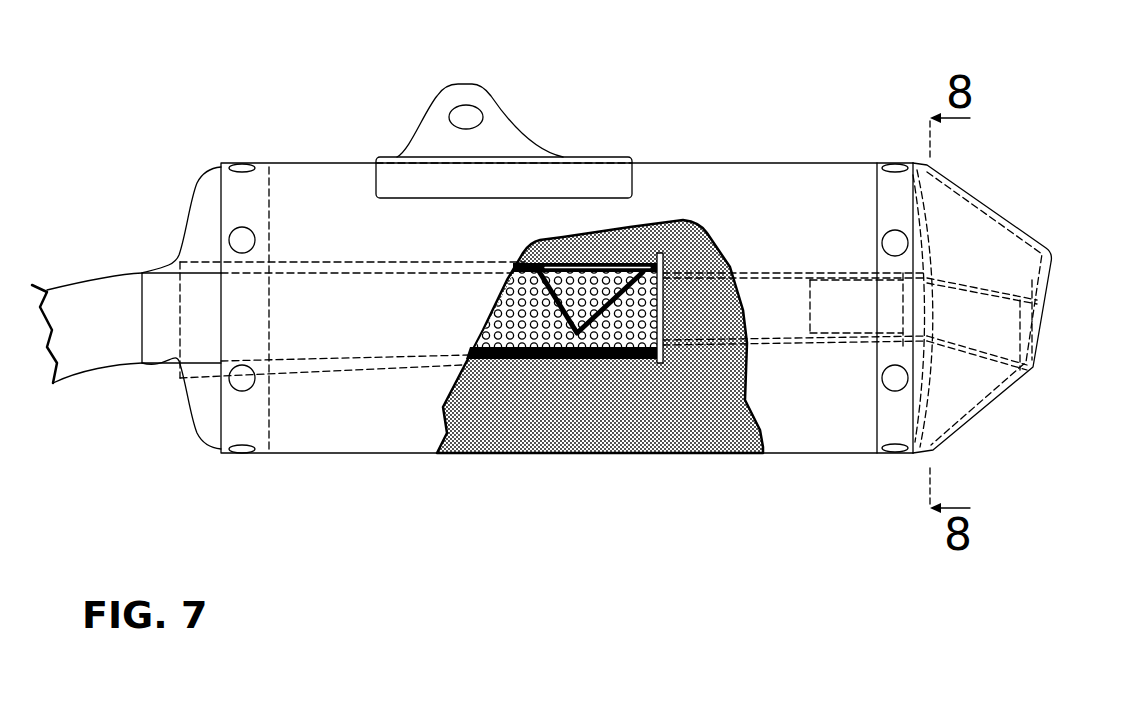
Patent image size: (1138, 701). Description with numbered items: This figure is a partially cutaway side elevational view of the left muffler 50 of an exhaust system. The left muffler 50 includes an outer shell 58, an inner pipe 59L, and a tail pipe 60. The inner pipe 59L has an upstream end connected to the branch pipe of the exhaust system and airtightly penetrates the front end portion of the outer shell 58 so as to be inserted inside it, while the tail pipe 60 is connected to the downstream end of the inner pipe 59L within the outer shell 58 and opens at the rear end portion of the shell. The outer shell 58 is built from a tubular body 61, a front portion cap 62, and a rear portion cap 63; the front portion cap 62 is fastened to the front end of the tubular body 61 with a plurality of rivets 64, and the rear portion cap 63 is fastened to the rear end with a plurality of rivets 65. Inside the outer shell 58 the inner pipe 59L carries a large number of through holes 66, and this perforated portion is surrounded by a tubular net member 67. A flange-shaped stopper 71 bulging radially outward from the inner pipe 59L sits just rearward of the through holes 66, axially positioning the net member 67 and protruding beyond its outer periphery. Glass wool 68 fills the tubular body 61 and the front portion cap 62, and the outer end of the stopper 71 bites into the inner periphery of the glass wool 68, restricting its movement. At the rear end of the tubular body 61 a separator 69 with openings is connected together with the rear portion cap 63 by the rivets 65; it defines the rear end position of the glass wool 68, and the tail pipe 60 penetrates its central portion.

The left muffler 50 is at (748, 158).
The outer shell 58 is at (345, 158).
The inner pipe 59L is at (98, 347).
The tail pipe 60 is at (977, 347).
The tubular body 61 is at (386, 445).
The front portion cap 62 is at (190, 228).
The rear portion cap 63 is at (1027, 230).
The rivets 64 is at (242, 250).
The rivets 65 is at (893, 389).
The through holes 66 is at (537, 350).
The tubular net member 67 is at (620, 262).
The glass wool 68 is at (673, 423).
The separator 69 is at (933, 250).
The flange-shaped stopper 71 is at (663, 322).